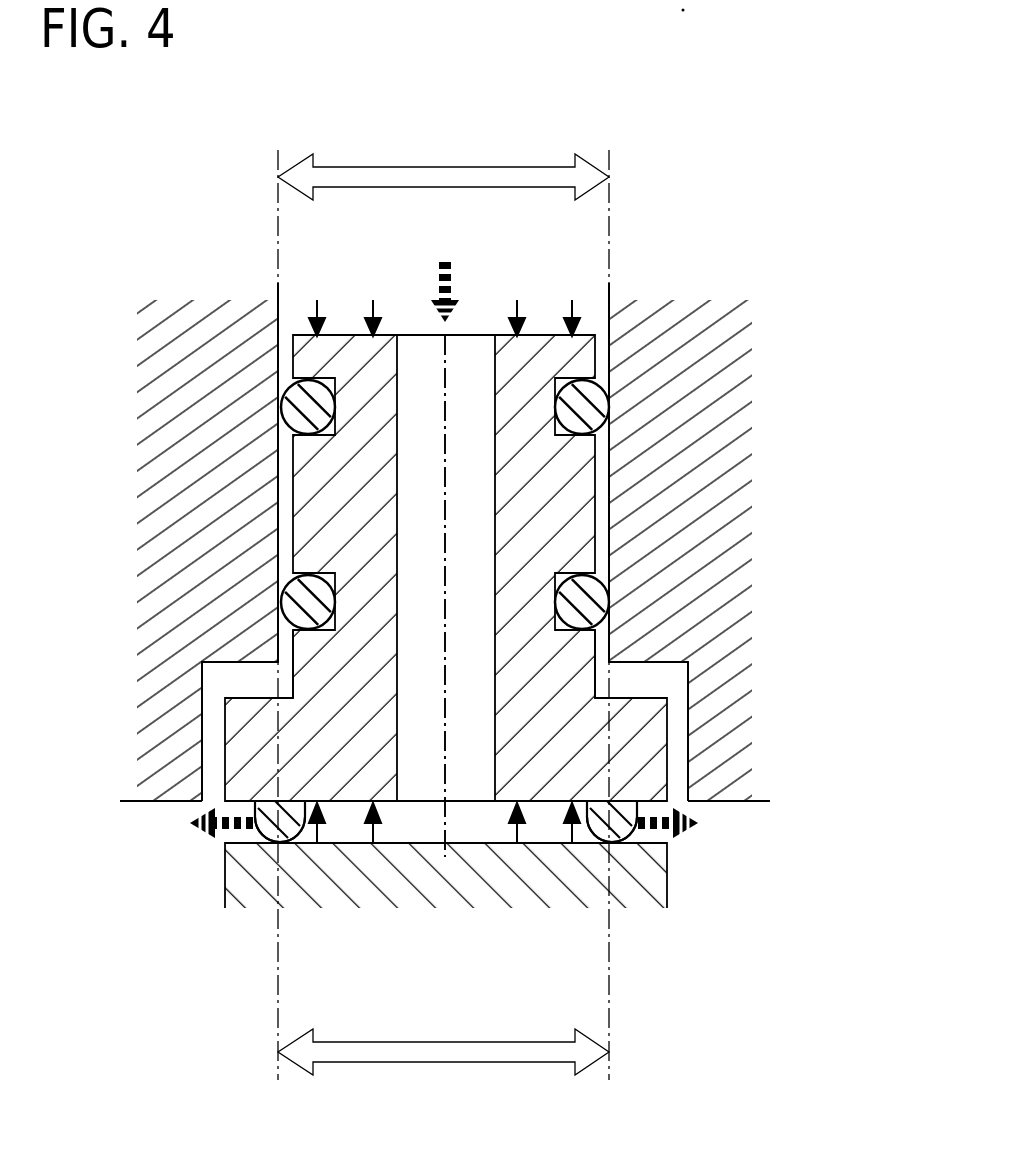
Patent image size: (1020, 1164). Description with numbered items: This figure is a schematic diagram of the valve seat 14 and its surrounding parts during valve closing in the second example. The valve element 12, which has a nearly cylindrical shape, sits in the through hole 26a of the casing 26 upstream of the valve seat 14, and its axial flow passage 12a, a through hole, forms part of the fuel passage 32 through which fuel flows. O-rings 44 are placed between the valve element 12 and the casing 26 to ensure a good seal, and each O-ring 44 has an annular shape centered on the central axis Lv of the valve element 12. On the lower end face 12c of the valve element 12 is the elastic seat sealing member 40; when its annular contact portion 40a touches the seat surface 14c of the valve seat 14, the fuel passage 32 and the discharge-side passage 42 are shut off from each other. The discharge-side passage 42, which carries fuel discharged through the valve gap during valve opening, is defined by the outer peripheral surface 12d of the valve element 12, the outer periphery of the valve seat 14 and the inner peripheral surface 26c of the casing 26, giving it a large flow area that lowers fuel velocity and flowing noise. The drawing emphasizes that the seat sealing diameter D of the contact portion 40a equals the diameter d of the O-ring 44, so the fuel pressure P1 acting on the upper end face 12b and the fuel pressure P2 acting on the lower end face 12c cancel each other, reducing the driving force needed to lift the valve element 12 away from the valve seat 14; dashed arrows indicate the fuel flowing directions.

The valve element 12 is at (596, 350).
The flow passage 12a is at (452, 498).
The fuel passage 32 is at (641, 596).
The upper end face 12b is at (530, 334).
The lower end face 12c is at (548, 805).
The outer peripheral surface 12d is at (598, 672).
The valve seat 14 is at (228, 870).
The seat surface 14c is at (424, 840).
The casing 26 is at (670, 578).
The through hole 26a is at (674, 703).
The inner peripheral surface 26c is at (612, 505).
The seat sealing member 40 is at (262, 830).
The contact portion 40a is at (292, 836).
The discharge-side passage 42 is at (736, 879).
The O-rings 44 is at (284, 410).
The fuel pressure P1 is at (377, 330).
The fuel pressure P2 is at (374, 832).
The central axis Lv is at (447, 815).
The diameter of the O-ring d is at (443, 169).
The seat sealing diameter D is at (443, 1044).